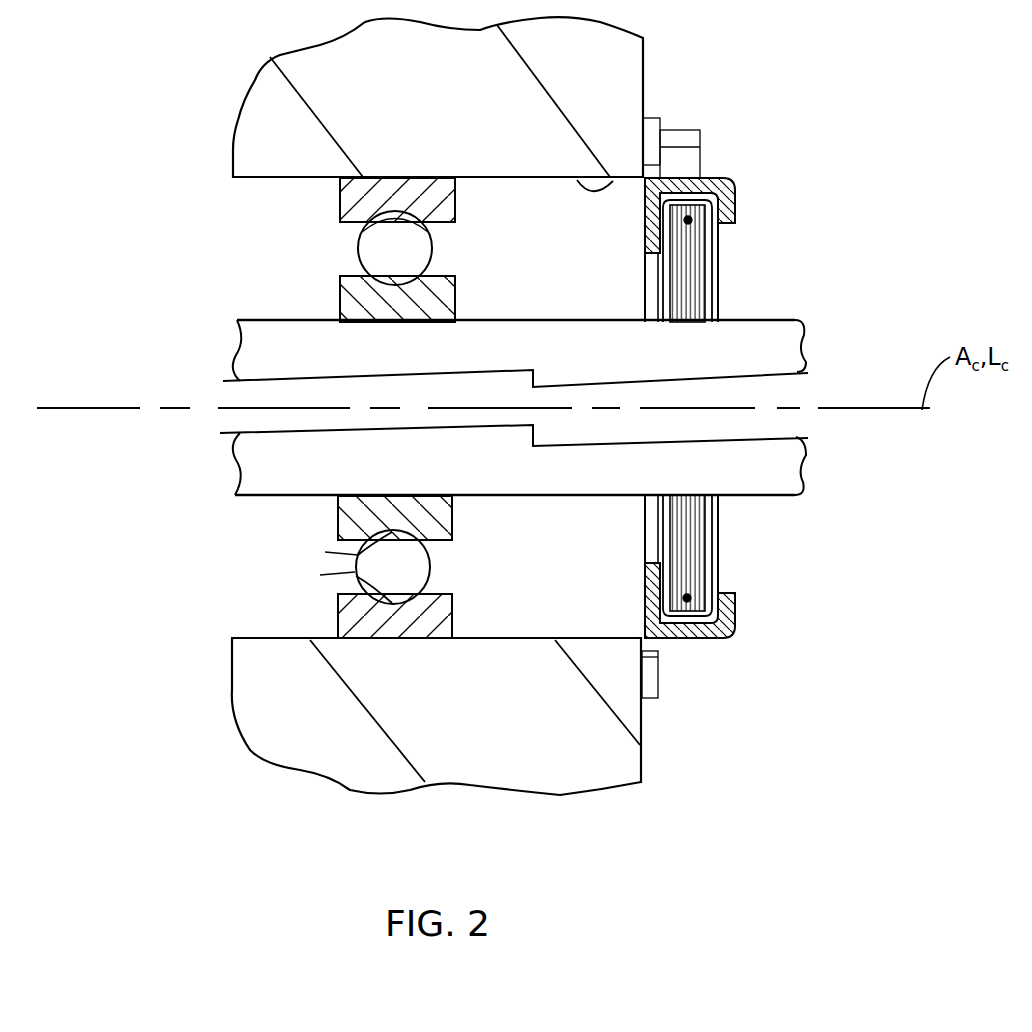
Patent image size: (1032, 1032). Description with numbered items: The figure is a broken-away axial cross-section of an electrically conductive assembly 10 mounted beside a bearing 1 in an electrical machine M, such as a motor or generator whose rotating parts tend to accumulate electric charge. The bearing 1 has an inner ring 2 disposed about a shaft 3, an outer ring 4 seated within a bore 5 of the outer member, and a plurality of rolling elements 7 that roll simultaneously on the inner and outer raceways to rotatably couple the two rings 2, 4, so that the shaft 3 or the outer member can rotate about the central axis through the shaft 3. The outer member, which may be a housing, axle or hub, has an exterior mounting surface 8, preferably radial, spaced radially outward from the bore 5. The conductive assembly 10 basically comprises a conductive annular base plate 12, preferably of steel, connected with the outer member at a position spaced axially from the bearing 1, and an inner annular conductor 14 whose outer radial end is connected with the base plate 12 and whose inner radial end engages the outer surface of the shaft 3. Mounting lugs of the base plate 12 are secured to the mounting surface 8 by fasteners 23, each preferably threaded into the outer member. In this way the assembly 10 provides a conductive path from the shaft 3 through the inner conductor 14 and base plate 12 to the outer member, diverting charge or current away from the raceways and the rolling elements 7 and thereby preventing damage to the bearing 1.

The electrical machine M is at (138, 68).
The bearing 1 is at (250, 230).
The inner ring 2 is at (450, 298).
The shaft 3 is at (787, 312).
The outer ring 4 is at (450, 206).
The bore 5 is at (612, 178).
The rolling elements 7 is at (413, 250).
The exterior mounting surface 8 is at (645, 70).
The electrically conductive assembly 10 is at (825, 209).
The conductive annular base plate 12 is at (748, 152).
The inner annular conductor 14 is at (740, 540).
The fastener 23 is at (687, 135).